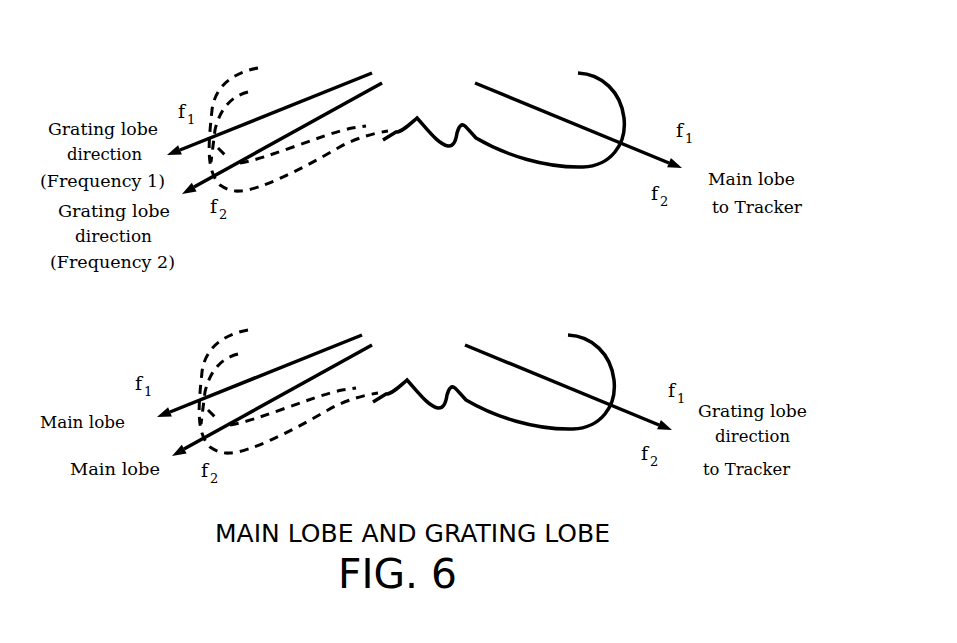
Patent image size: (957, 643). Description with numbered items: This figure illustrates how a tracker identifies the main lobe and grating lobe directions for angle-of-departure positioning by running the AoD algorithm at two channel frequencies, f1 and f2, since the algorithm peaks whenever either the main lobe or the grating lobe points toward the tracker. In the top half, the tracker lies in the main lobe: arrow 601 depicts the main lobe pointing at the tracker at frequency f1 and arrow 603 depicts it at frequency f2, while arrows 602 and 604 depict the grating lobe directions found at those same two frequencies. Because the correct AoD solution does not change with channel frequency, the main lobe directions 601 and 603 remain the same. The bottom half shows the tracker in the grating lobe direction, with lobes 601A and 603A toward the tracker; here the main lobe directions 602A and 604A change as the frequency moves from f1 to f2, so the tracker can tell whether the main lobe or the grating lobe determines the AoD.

The arrow 601 is at (498, 84).
The arrow 602 is at (366, 76).
The arrow 603 is at (530, 101).
The arrow 604 is at (317, 118).
The grating lobe direction arrow (to tracker) 601A is at (568, 372).
The main lobe direction 602A is at (259, 364).
The grating lobe 603A is at (493, 381).
The main lobe direction 604A is at (272, 390).